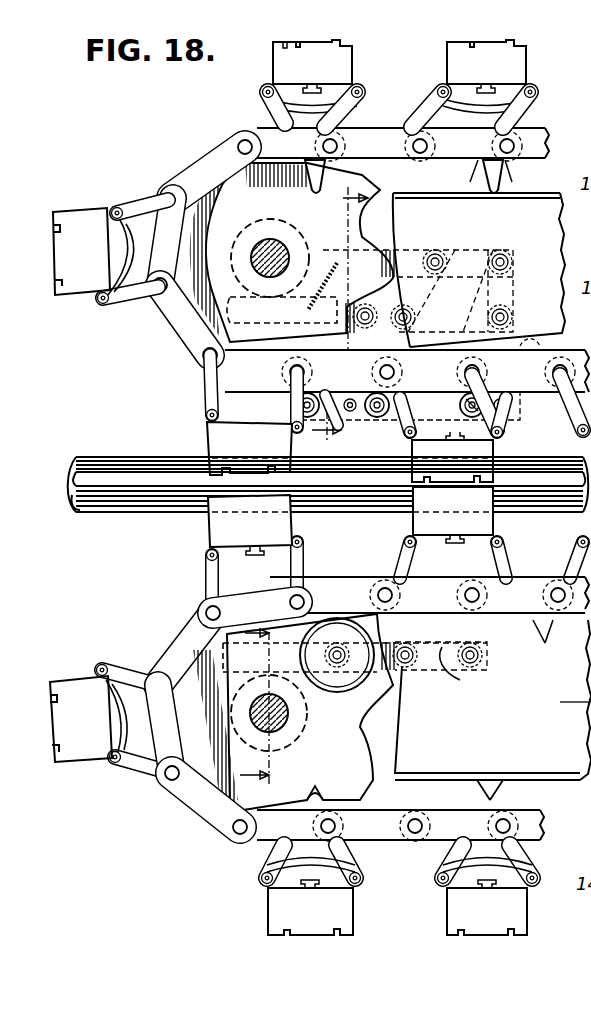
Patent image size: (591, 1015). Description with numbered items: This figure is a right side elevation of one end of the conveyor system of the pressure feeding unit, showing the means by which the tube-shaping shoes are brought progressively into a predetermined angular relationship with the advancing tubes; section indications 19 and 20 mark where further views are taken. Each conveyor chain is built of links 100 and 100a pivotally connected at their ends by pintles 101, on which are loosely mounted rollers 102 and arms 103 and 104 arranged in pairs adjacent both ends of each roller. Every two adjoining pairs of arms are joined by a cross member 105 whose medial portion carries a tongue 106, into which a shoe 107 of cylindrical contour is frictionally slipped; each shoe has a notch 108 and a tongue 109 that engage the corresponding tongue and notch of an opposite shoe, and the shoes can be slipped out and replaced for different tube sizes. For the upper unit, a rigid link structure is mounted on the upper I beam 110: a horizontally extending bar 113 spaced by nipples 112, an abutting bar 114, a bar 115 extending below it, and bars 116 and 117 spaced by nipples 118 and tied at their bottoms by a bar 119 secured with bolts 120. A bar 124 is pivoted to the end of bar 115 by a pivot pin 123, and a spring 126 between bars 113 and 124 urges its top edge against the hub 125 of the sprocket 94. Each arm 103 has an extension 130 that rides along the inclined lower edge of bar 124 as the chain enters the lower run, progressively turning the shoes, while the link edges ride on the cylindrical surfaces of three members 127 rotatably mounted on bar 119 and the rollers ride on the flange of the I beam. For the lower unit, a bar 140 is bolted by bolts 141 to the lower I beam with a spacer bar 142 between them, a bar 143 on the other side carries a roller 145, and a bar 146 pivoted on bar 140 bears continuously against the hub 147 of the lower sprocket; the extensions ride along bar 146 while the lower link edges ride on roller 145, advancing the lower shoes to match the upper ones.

The sprocket 94 is at (178, 318).
The link 100 is at (173, 241).
The link 100a is at (186, 173).
The pintle 101 is at (334, 144).
The roller 102 is at (234, 130).
The arm 103 is at (340, 120).
The arm 104 is at (254, 108).
The cross member 105 is at (122, 234).
The tongue 106 is at (318, 90).
The shoe 107 is at (312, 45).
The notch 108 is at (284, 40).
The tongue 109 is at (373, 17).
The I beam 110 is at (472, 270).
The spacing nipple 112 is at (436, 252).
The bar 113 is at (392, 258).
The bar 114 is at (467, 320).
The bar 115 is at (407, 371).
The bar 116 is at (516, 340).
The bar 117 is at (333, 364).
The spacing nipple 118 is at (413, 317).
The bar 119 is at (513, 423).
The bolt 120 is at (353, 416).
The pivot pin 123 is at (366, 303).
The bar 124 is at (230, 283).
The hub 125 is at (269, 225).
The spring 126 is at (327, 266).
The member 127 is at (298, 405).
The extension 130 is at (486, 176).
The bar 140 is at (455, 645).
The bolt 141 is at (483, 659).
The bar 142 is at (452, 672).
The bar 143 is at (342, 632).
The roller 145 is at (370, 684).
The bar 146 is at (300, 688).
The hub 147 is at (290, 743).
The section line 19 is at (340, 319).
The section line 20 is at (270, 713).